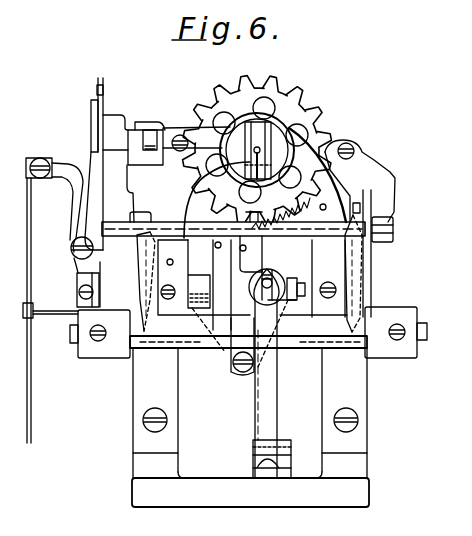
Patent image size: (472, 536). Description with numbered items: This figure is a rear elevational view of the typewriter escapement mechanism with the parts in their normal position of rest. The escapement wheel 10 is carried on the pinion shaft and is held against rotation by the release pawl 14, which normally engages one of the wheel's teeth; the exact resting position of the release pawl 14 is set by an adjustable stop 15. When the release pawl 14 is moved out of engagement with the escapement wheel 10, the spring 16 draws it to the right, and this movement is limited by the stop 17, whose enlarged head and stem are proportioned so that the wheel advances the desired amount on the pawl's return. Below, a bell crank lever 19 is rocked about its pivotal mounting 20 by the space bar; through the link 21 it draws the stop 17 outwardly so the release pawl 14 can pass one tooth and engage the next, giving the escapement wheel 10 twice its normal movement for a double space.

The escapement wheel 10 is at (296, 108).
The release pawl 14 is at (247, 249).
The stop 15 is at (215, 246).
The spring 16 is at (295, 206).
The stop 17 is at (290, 281).
The bell crank lever 19 is at (278, 381).
The pivotal mounting 20 is at (285, 450).
The link 21 is at (286, 313).